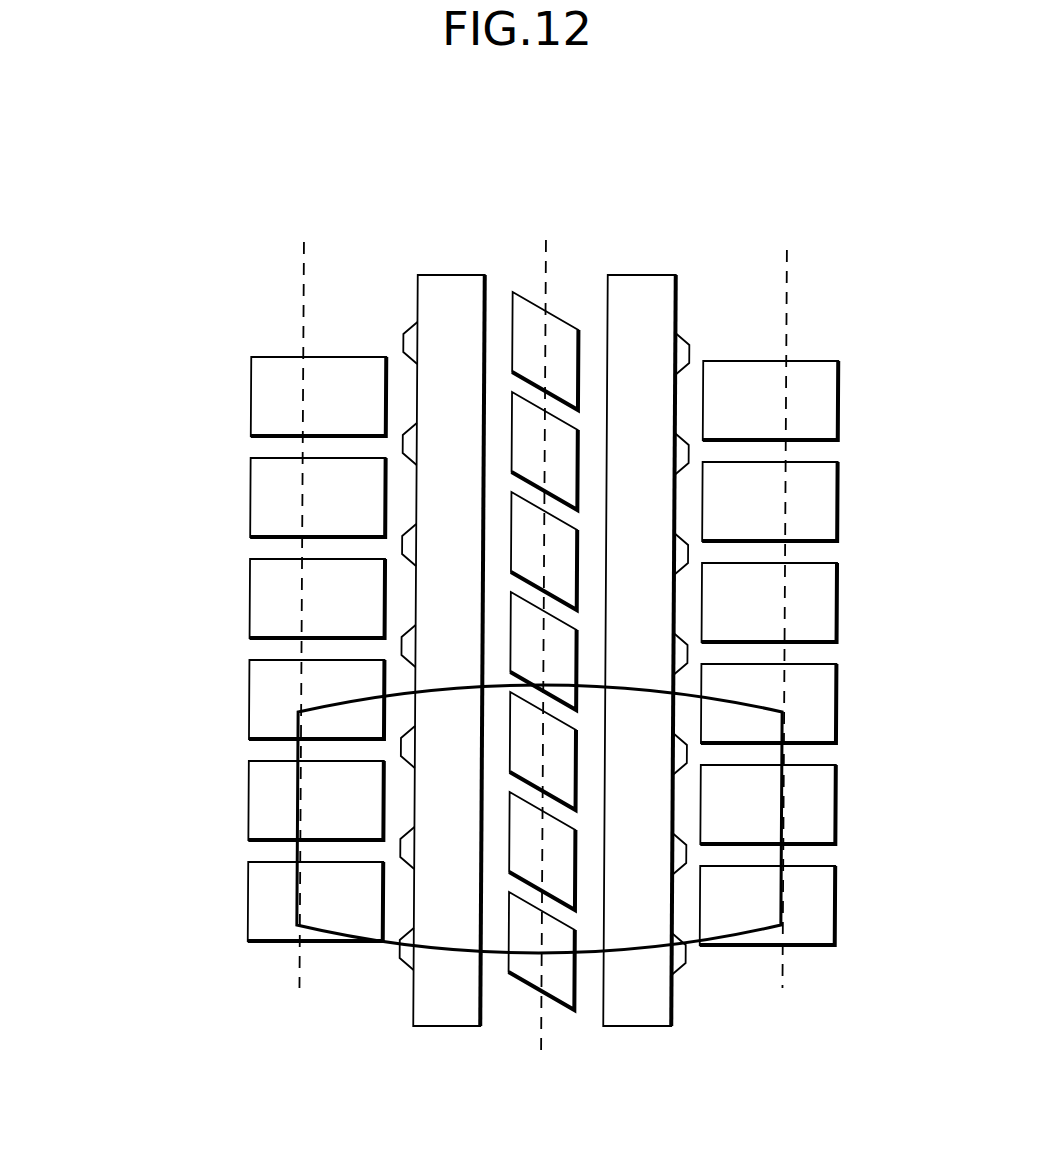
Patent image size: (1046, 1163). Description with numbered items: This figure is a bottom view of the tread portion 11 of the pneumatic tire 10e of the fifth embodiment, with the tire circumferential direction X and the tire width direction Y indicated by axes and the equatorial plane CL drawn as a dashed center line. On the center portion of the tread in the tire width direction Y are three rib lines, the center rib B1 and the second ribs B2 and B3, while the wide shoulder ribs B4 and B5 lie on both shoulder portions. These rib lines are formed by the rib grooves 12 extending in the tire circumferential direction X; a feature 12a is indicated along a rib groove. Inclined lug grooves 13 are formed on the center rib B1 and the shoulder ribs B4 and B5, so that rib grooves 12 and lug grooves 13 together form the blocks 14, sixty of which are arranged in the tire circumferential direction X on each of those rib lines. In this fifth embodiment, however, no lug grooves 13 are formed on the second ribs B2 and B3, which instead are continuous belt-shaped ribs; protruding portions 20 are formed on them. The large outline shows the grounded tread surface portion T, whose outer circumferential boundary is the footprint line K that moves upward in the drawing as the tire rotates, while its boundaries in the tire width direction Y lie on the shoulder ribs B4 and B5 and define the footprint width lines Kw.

The pneumatic tire 10e is at (122, 245).
The tread portion 11 is at (802, 392).
The rib groove 12 is at (398, 368).
The rib side wall 12a is at (417, 400).
The lug groove 13 is at (265, 744).
The block 14 is at (258, 619).
The protruding portion 20 is at (683, 442).
The center rib B1 is at (518, 290).
The second rib B2 is at (437, 274).
The second rib B3 is at (632, 273).
The shoulder rib B4 is at (332, 342).
The shoulder rib B5 is at (817, 352).
The footprint line K is at (400, 945).
The footprint width line Kw is at (298, 300).
The equatorial plane CL is at (540, 665).
The tread surface portion T is at (730, 893).
The tire circumferential direction X is at (111, 1000).
The tire width direction Y is at (111, 1000).